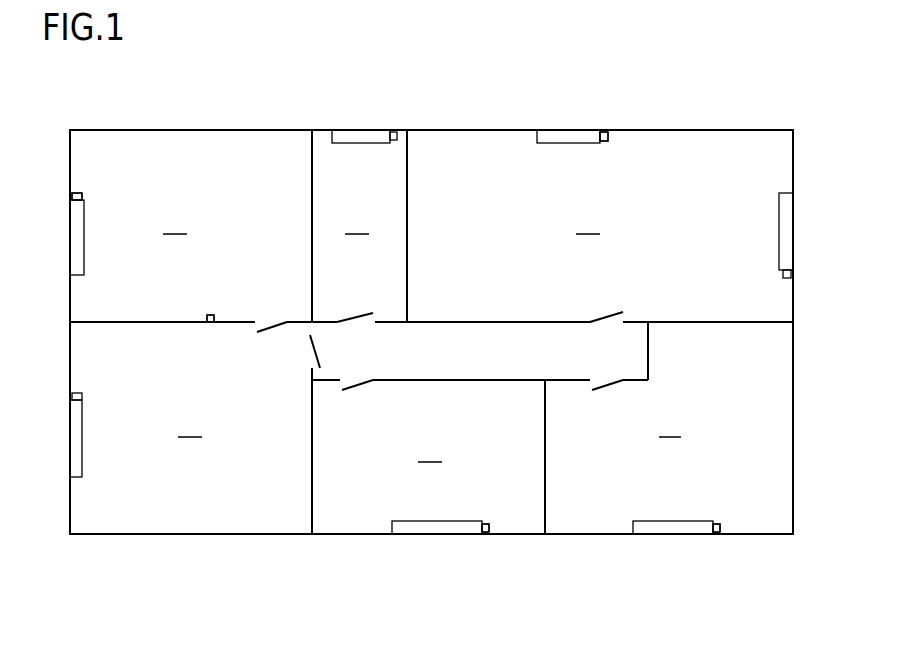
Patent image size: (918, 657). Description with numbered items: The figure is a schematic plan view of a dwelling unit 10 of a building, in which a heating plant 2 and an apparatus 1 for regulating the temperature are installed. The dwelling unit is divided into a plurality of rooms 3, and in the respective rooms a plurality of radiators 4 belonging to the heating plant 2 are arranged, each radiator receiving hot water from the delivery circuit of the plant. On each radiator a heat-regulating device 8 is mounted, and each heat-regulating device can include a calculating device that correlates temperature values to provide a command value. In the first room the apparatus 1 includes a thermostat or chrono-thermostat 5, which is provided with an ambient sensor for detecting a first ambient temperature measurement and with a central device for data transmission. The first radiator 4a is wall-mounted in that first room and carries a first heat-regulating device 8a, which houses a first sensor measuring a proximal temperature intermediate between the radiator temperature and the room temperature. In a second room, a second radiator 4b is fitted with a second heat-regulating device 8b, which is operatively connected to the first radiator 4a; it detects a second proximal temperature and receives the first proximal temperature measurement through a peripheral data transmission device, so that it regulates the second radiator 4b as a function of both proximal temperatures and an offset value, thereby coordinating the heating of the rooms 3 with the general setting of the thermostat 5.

The apparatus for regulating the temperature 1 is at (396, 331).
The heating plant 2 is at (281, 329).
The rooms 3 is at (353, 539).
The radiators 4 is at (581, 334).
The first radiator 4a is at (78, 240).
The second radiator 4b is at (78, 455).
The thermostat or chrono-thermostat 5 is at (208, 314).
The heat-regulating device 8 is at (613, 339).
The first heat-regulating device 8a is at (82, 194).
The second heat-regulating device 8b is at (83, 396).
The dwelling unit 10 is at (236, 572).